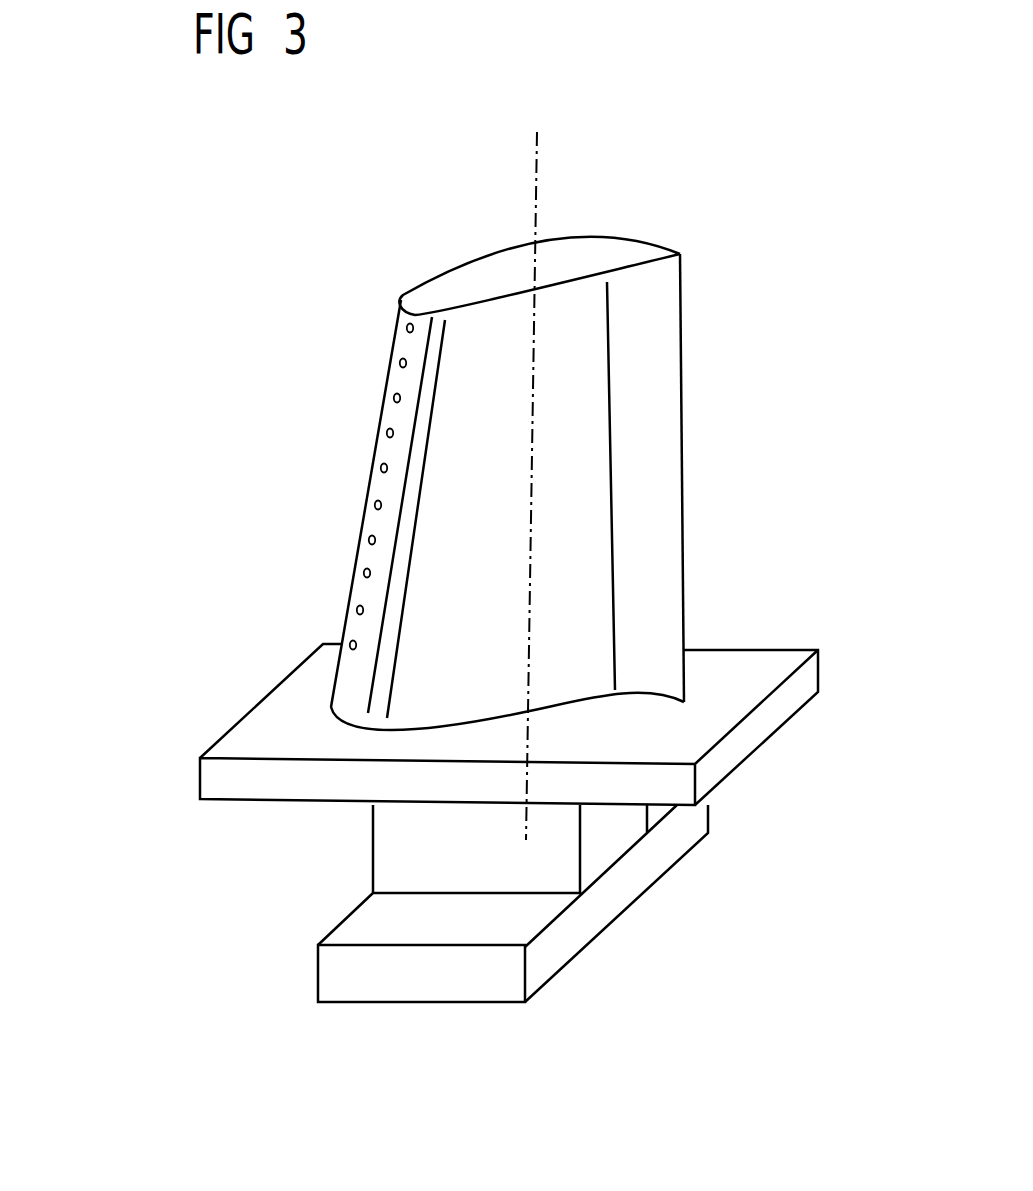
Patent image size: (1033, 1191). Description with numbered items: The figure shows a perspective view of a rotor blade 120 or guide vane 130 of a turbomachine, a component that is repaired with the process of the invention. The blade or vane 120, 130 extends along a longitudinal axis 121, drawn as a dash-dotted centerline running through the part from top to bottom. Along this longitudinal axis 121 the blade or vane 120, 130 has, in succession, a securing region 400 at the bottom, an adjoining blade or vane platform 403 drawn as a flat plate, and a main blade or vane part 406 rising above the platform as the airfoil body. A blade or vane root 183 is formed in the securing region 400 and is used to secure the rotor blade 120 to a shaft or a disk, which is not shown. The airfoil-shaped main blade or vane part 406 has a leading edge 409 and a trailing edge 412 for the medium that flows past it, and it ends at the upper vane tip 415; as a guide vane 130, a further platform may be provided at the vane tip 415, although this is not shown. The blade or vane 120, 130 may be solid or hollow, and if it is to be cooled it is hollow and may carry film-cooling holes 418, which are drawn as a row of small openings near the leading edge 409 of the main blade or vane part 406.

The rotor blade 120 is at (438, 437).
The guide vane 130 is at (438, 437).
The longitudinal axis 121 is at (535, 178).
The vane tip 415 is at (433, 290).
The film-cooling holes 418 is at (400, 362).
The leading edge 409 is at (376, 399).
The trailing edge 412 is at (703, 437).
The main blade or vane part 406 is at (353, 687).
The blade or vane platform 403 is at (778, 700).
The securing region 400 is at (501, 903).
The blade or vane root 183 is at (362, 927).